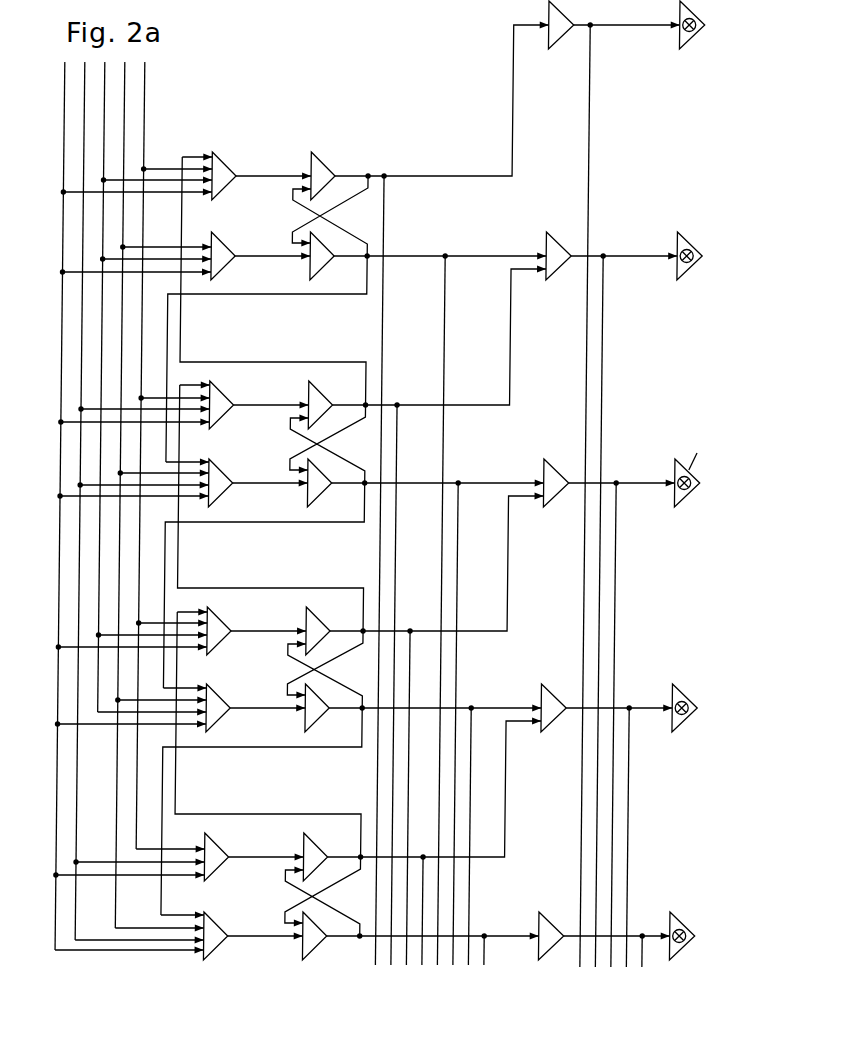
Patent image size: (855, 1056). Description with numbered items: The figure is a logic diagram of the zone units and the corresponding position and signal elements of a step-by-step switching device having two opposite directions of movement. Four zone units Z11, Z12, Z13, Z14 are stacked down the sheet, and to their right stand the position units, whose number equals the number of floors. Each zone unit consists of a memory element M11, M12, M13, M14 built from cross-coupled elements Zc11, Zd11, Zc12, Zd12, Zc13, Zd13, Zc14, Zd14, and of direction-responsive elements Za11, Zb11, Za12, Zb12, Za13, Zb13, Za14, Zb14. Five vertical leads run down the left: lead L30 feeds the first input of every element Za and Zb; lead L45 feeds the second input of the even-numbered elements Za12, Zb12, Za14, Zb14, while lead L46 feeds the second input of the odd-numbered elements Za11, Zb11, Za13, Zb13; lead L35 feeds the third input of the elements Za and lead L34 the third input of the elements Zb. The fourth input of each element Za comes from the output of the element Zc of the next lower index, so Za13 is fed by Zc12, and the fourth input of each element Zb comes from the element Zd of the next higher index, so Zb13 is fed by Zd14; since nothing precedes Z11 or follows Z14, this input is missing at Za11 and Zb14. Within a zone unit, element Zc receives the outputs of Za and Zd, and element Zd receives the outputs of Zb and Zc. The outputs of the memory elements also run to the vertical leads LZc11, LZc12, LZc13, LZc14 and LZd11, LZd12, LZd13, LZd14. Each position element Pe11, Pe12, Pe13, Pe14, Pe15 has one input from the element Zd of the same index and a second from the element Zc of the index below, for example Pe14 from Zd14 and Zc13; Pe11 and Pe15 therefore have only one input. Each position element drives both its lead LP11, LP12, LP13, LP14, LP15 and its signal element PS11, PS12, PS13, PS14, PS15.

The lead L30 is at (52, 506).
The lead L46 is at (72, 501).
The lead L45 is at (93, 387).
The lead L34 is at (112, 495).
The lead L35 is at (132, 455).
The zone unit Z14 is at (294, 215).
The element Za14 is at (228, 164).
The element Zb14 is at (229, 268).
The element Zc14 is at (330, 164).
The element Zd14 is at (329, 268).
The memory element M14 is at (334, 216).
The zone unit Z13 is at (291, 443).
The element Za13 is at (228, 393).
The element Zb13 is at (229, 495).
The element Zc13 is at (330, 393).
The element Zd13 is at (329, 495).
The memory element M13 is at (332, 444).
The zone unit Z12 is at (289, 669).
The element Za12 is at (228, 619).
The element Zb12 is at (229, 720).
The element Zc12 is at (330, 619).
The element Zd12 is at (329, 720).
The memory element M12 is at (329, 669).
The zone unit Z11 is at (286, 896).
The element Za11 is at (228, 845).
The element Zb11 is at (229, 948).
The element Zc11 is at (330, 845).
The element Zd11 is at (329, 948).
The memory element M11 is at (327, 896).
The lead LZc14 is at (386, 965).
The lead LZc13 is at (402, 965).
The lead LZc12 is at (417, 965).
The lead LZc11 is at (432, 965).
The lead LZd14 is at (448, 965).
The lead LZd13 is at (464, 965).
The lead LZd12 is at (479, 965).
The lead LZd11 is at (494, 965).
The position element Pe15 is at (560, 40).
The position element Pe14 is at (560, 271).
The position element Pe13 is at (560, 498).
The position element Pe12 is at (560, 723).
The position element Pe11 is at (560, 951).
The signal element PS15 is at (692, 38).
The signal element PS14 is at (692, 269).
The signal element PS13 is at (692, 496).
The signal element PS12 is at (692, 721).
The signal element PS11 is at (692, 949).
The lead LP15 is at (590, 967).
The lead LP14 is at (606, 967).
The lead LP13 is at (622, 967).
The lead LP12 is at (637, 967).
The lead LP11 is at (652, 967).